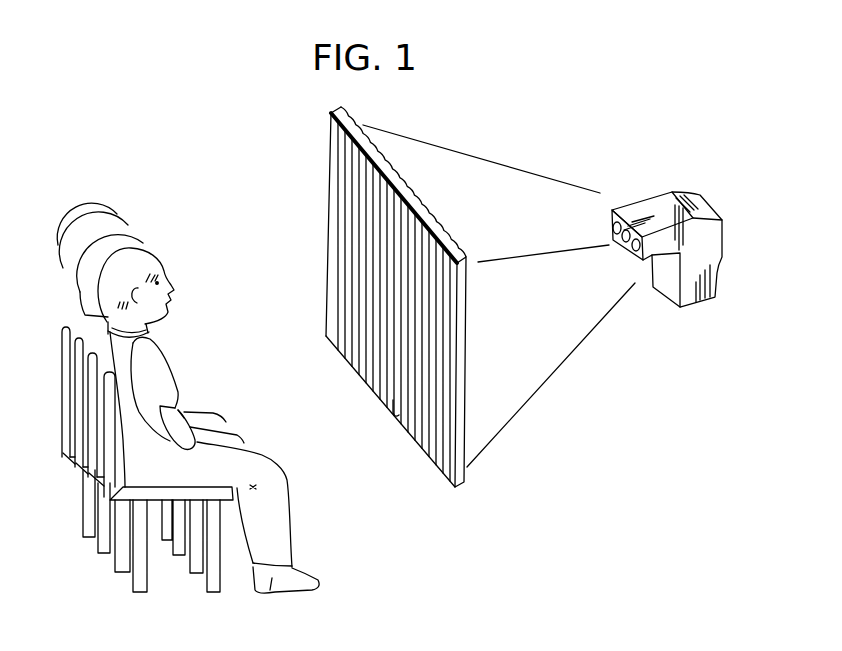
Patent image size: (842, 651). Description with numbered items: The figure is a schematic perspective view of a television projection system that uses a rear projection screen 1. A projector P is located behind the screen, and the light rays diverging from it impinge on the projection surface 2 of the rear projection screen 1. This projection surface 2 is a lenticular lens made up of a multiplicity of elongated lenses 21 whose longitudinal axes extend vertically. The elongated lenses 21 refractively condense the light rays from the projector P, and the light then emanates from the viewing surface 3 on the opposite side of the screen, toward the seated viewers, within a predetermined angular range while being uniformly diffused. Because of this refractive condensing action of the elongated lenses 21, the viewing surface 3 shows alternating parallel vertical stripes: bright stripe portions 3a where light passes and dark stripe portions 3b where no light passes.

The rear projection screen 1 is at (333, 113).
The projection surface 2 is at (429, 211).
The elongated lenses 21 is at (350, 112).
The viewing surface 3 is at (330, 132).
The bright stripe portions 3a is at (432, 455).
The dark stripe portions 3b is at (395, 420).
The projector P is at (655, 200).